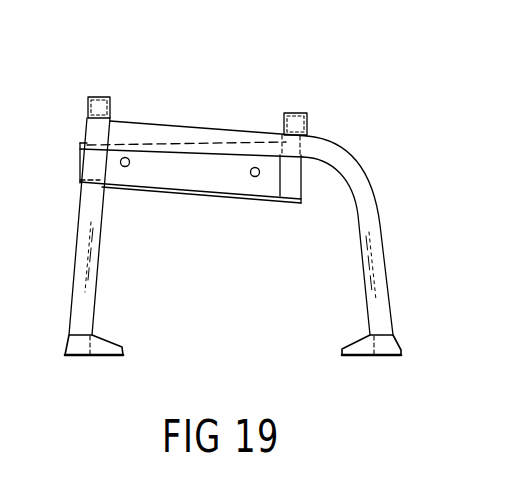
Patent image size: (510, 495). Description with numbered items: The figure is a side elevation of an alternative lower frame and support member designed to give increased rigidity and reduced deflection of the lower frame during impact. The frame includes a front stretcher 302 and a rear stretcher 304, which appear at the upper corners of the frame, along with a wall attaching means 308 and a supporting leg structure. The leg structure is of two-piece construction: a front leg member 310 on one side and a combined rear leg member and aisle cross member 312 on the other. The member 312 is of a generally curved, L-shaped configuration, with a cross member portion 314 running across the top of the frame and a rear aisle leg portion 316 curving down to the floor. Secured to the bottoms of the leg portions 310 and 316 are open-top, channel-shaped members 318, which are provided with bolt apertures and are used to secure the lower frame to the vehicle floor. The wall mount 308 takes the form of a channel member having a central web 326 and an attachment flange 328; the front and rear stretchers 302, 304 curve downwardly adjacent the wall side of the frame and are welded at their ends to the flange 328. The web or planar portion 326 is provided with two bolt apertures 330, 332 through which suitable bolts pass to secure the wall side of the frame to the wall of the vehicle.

The front stretcher 302 is at (93, 95).
The rear stretcher 304 is at (297, 112).
The wall attaching means 308 is at (245, 197).
The front leg member 310 is at (83, 227).
The combined rear leg member and aisle cross member 312 is at (223, 113).
The cross member portion 314 is at (166, 131).
The rear aisle leg portion 316 is at (367, 192).
The channel-shaped members 318 is at (102, 343).
The central web 326 is at (168, 177).
The attachment flange 328 is at (176, 186).
The bolt aperture 330 is at (121, 159).
The bolt aperture 332 is at (258, 169).